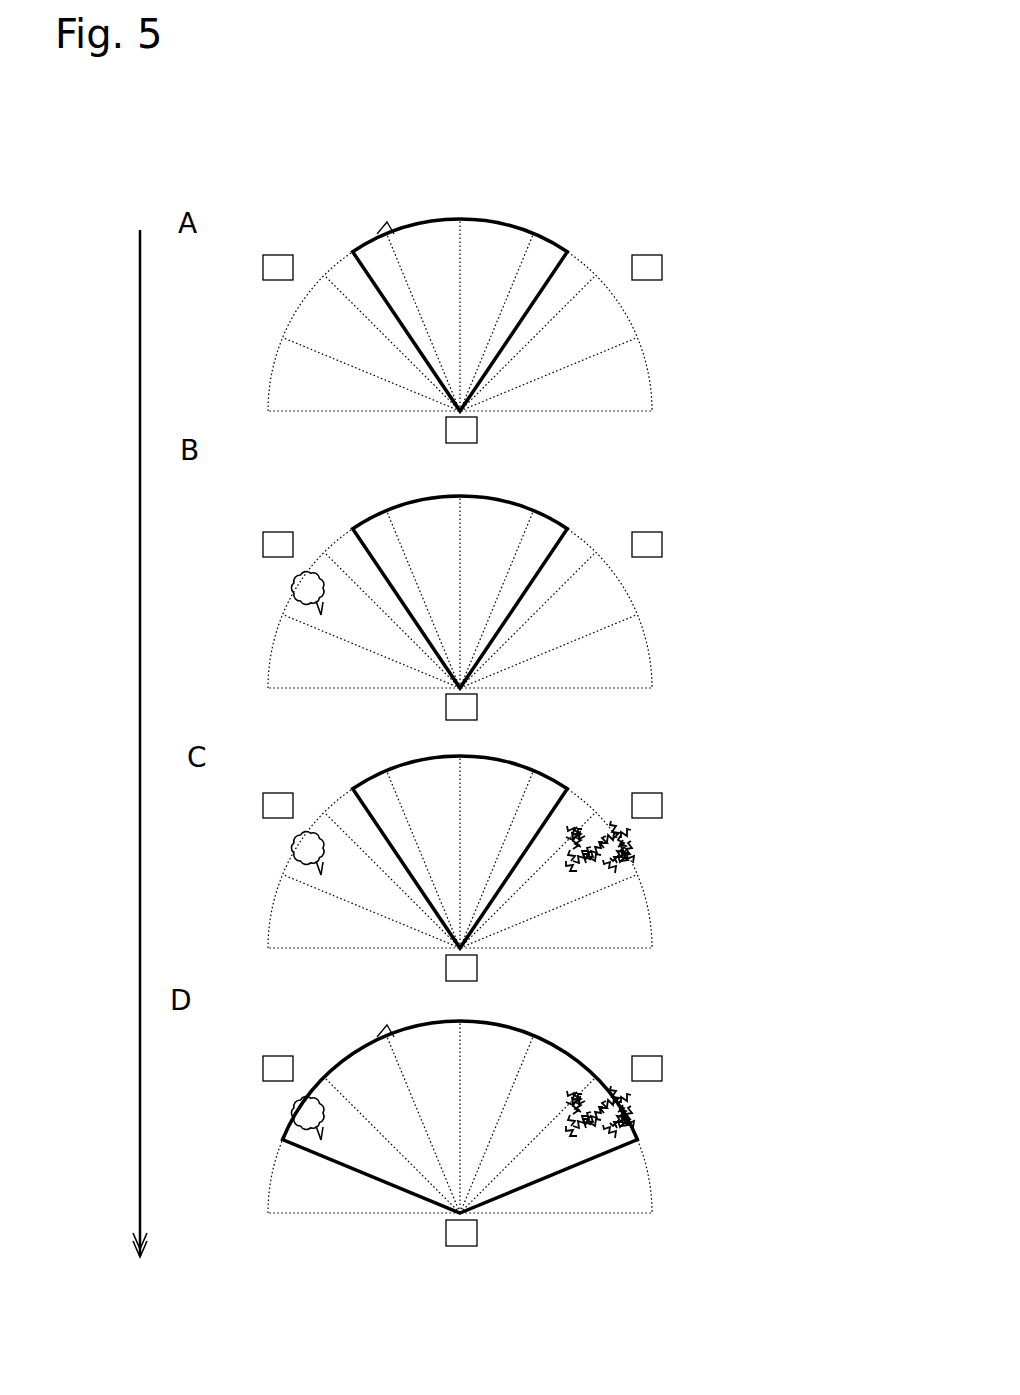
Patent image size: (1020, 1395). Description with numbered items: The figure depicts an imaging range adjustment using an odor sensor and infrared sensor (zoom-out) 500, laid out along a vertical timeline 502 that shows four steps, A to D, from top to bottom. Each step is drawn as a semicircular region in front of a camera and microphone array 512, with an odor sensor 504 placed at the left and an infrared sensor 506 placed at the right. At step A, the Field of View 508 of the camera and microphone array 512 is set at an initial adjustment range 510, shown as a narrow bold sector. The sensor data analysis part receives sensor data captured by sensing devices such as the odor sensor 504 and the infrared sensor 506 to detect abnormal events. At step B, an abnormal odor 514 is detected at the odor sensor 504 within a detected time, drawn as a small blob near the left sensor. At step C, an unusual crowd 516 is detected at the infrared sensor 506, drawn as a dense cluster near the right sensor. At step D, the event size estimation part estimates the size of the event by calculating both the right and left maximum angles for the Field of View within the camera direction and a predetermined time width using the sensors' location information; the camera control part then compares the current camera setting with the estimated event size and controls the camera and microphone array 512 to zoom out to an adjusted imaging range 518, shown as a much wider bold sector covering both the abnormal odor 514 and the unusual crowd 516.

The imaging range adjustment using an odor sensor and infrared sensor (zoom-out) 500 is at (745, 213).
The timeline 502 is at (140, 301).
The odor sensor 504 is at (283, 635).
The infrared sensor 506 is at (660, 635).
The Field of View 508 is at (460, 315).
The initial adjustment range 510 is at (379, 234).
The camera and microphone array 512 is at (500, 850).
The abnormal odor 514 is at (260, 856).
The unusual crowd 516 is at (648, 982).
The adjusted imaging range 518 is at (379, 1037).